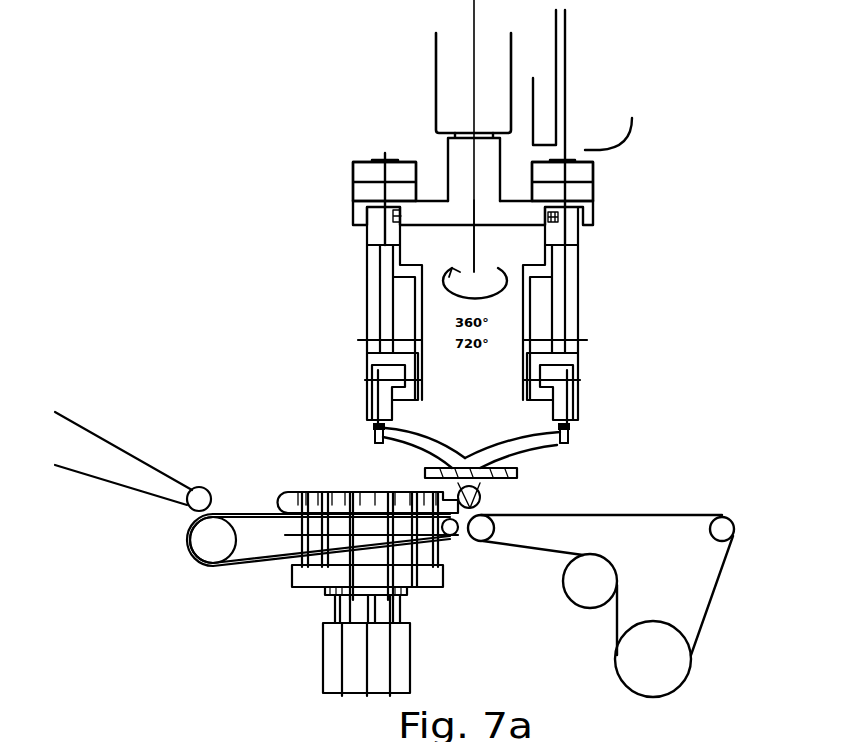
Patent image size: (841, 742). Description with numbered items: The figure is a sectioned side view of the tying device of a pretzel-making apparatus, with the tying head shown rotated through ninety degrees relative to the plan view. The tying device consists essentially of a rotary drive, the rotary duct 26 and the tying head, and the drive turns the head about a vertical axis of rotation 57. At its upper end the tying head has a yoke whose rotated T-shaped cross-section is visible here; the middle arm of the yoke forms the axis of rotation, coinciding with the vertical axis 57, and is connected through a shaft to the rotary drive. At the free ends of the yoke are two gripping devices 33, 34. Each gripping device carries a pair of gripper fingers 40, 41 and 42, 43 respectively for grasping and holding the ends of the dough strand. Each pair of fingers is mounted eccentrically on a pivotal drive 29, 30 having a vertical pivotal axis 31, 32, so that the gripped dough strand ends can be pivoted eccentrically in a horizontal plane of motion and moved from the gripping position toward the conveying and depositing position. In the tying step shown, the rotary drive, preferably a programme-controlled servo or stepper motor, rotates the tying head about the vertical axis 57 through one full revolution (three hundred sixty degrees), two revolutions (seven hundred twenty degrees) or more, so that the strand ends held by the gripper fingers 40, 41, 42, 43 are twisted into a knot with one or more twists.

The rotary duct 26 is at (436, 95).
The pivotal drive 29 is at (579, 173).
The pivotal drive 30 is at (365, 173).
The vertical pivotal axis 31 is at (562, 157).
The vertical pivotal axis 32 is at (385, 153).
The gripping device 33 is at (572, 312).
The gripping device 34 is at (385, 324).
The gripper finger 40 is at (577, 427).
The gripper finger 41 is at (564, 435).
The gripper finger 42 is at (372, 430).
The gripper finger 43 is at (379, 435).
The axis of rotation 57 is at (473, 242).